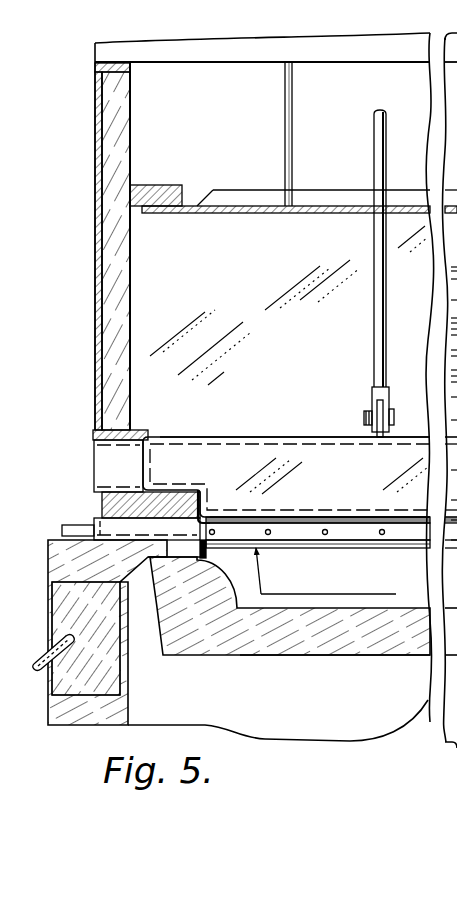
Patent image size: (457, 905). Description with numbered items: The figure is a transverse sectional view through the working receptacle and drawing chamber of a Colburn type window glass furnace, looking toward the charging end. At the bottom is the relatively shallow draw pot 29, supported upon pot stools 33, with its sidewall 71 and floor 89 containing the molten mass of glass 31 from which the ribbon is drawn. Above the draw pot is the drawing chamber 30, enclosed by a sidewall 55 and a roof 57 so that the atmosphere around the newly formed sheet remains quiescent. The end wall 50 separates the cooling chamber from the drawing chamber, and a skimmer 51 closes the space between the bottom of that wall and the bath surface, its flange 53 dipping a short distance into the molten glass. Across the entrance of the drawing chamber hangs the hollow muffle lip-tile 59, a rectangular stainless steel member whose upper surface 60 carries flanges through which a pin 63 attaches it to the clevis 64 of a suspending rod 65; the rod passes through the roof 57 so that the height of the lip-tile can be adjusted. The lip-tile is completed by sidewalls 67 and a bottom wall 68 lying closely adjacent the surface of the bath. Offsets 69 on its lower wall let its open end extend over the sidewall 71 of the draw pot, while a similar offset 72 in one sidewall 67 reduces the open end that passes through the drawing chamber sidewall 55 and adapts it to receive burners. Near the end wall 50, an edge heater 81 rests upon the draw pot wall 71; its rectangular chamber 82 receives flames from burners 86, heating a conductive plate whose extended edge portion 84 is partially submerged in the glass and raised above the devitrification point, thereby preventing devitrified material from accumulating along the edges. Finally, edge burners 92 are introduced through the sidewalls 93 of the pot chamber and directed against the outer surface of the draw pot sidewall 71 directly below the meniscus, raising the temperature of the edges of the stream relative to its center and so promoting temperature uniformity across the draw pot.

The draw pot 29 is at (373, 645).
The drawing chamber 30 is at (178, 255).
The mass of glass 31 is at (424, 598).
The pot stools 33 is at (453, 742).
The end wall 50 is at (239, 299).
The skimmer 51 is at (326, 541).
The flange 53 is at (387, 546).
The sidewalls 55 is at (114, 278).
The roof 57 is at (233, 206).
The muffle lip-tile 59 is at (197, 437).
The upper surface 60 is at (263, 437).
The pin 63 is at (362, 418).
The clevis 64 is at (372, 396).
The suspending rod 65 is at (373, 308).
The sidewalls 67 is at (297, 450).
The bottom wall 68 is at (325, 517).
The offsets 69 is at (208, 490).
The sidewall 71 is at (184, 559).
The offset 72 is at (140, 462).
The edge heater 81 is at (161, 533).
The rectangular chamber 82 is at (135, 528).
The extended edge portion 84 is at (206, 553).
The burners 86 is at (62, 530).
The floor 89 is at (288, 633).
The edge burners 92 is at (46, 653).
The sidewalls 93 is at (58, 605).